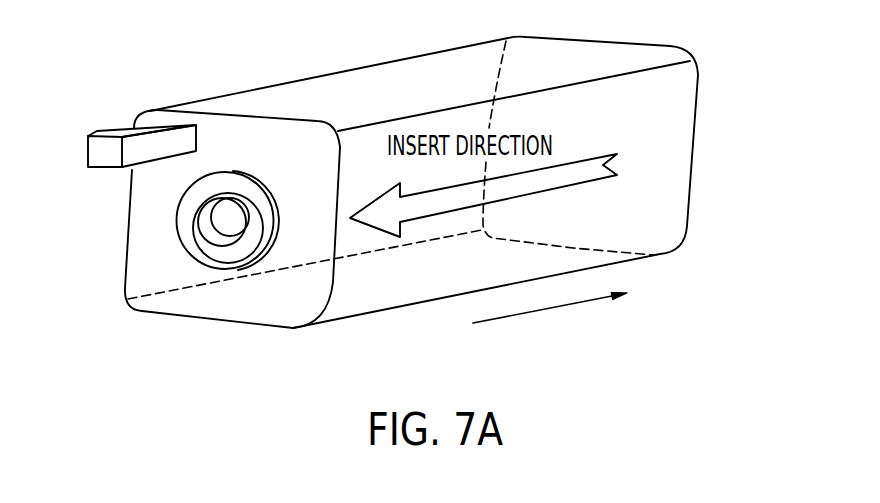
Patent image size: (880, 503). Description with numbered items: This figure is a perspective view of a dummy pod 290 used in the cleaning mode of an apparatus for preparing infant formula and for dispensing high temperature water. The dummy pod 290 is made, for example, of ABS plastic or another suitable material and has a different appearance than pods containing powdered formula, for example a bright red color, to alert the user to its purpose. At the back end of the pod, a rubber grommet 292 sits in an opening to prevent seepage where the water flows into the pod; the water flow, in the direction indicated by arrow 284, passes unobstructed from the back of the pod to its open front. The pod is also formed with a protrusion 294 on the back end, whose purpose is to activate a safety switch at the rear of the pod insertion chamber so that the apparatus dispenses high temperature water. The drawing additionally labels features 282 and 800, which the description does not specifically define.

The cartridge body 282 is at (117, 203).
The arrow 284 is at (560, 306).
The dummy pod 290 is at (402, 73).
The rubber grommet 292 is at (183, 233).
The protrusion 294 is at (171, 133).
The bore 800 is at (273, 228).